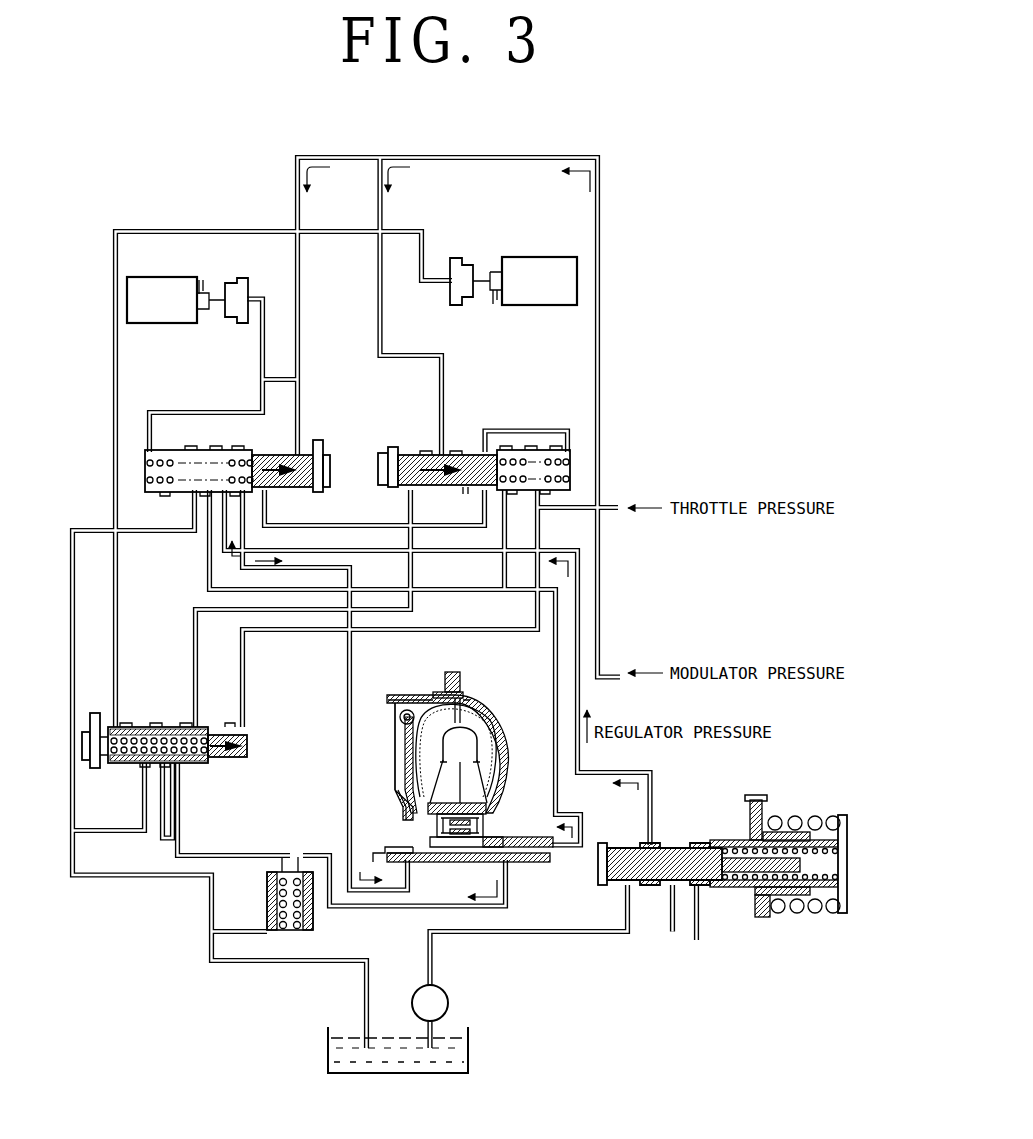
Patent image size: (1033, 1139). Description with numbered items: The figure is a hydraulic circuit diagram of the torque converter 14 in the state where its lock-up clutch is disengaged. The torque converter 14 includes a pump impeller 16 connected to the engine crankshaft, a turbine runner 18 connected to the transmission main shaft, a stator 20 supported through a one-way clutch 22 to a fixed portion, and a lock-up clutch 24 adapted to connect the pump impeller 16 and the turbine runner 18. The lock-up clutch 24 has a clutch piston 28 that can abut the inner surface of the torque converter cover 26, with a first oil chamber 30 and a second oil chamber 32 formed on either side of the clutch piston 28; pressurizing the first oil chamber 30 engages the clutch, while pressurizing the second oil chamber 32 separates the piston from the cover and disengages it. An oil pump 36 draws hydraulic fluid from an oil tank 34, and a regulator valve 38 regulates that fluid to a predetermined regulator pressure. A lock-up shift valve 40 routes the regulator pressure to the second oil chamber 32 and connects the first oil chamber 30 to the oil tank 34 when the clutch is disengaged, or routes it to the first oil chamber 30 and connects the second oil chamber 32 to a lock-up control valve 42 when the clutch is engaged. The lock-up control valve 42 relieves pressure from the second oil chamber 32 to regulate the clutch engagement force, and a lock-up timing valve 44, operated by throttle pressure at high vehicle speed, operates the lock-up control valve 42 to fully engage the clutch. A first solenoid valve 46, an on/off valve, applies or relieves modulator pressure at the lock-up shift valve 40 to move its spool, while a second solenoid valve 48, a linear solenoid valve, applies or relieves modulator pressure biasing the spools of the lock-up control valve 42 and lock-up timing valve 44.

The torque converter 14 is at (431, 766).
The pump impeller 16 is at (491, 742).
The turbine runner 18 is at (445, 691).
The stator 20 is at (462, 780).
The one-way clutch 22 is at (463, 855).
The lock-up clutch 24 is at (406, 692).
The torque converter cover 26 is at (384, 778).
The clutch piston 28 is at (392, 742).
The first oil chamber 30 is at (407, 783).
The second oil chamber 32 is at (402, 752).
The oil tank 34 is at (468, 1048).
The oil pump 36 is at (449, 1003).
The regulator valve 38 is at (786, 808).
The lock-up shift valve 40 is at (206, 438).
The lock-up control valve 42 is at (463, 435).
The lock-up timing valve 44 is at (143, 717).
The first solenoid valve 46 is at (158, 277).
The second solenoid valve 48 is at (517, 257).